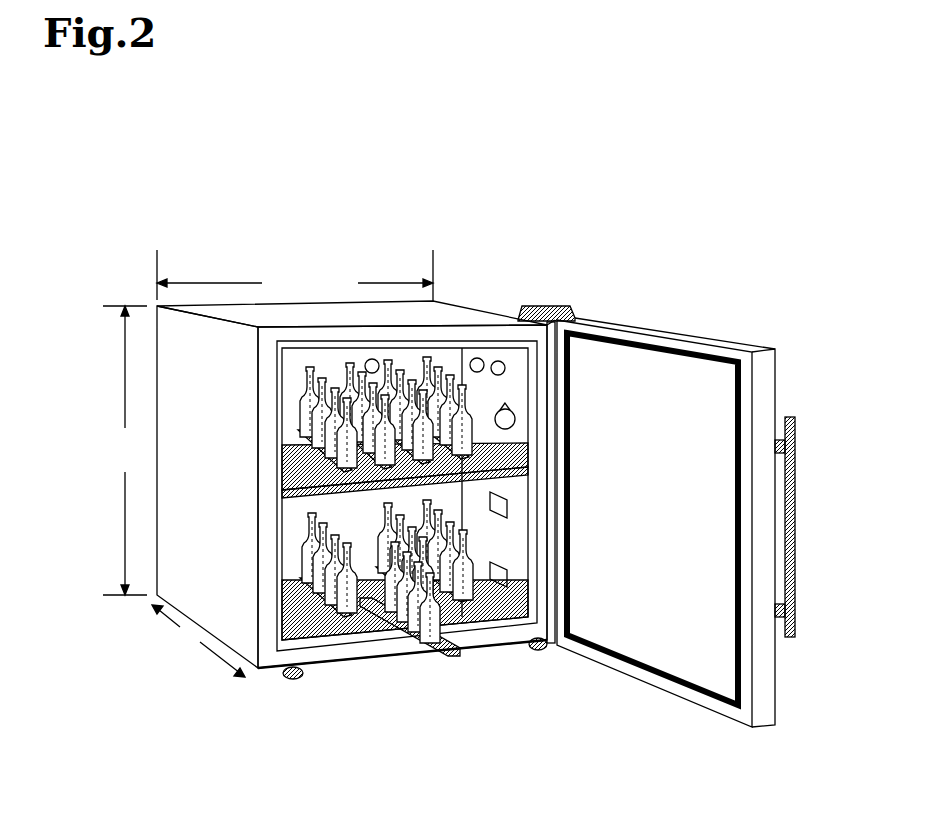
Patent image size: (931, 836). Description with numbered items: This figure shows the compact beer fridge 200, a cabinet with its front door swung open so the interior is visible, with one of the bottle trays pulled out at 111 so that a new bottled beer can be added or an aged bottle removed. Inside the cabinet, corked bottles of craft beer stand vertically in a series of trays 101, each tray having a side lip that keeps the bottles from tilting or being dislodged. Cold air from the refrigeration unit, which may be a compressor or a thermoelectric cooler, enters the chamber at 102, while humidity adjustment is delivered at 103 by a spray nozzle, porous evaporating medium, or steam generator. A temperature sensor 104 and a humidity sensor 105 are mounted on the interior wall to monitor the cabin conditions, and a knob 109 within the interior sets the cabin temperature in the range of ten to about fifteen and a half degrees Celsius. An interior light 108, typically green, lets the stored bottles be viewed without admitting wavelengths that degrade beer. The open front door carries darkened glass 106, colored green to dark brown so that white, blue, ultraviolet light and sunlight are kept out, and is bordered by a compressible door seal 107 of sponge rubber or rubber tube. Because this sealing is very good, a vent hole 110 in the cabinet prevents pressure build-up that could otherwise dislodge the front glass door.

The beer fridge 200 is at (572, 235).
The trays 101 is at (317, 452).
The cold air inlet 102 is at (507, 578).
The humidity adjustment 103 is at (507, 504).
The temperature sensor 104 is at (484, 361).
The humidity sensor 105 is at (505, 368).
The darkened glass 106 is at (678, 412).
The door seal 107 is at (663, 352).
The interior light 108 is at (350, 363).
The knob 109 is at (515, 420).
The vent hole 110 is at (440, 302).
The pulled-out tray 111 is at (410, 648).